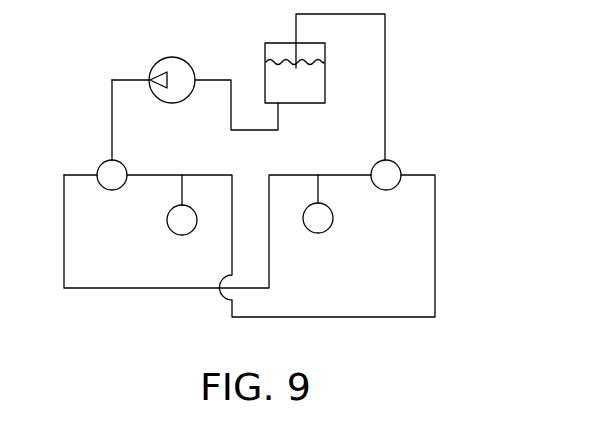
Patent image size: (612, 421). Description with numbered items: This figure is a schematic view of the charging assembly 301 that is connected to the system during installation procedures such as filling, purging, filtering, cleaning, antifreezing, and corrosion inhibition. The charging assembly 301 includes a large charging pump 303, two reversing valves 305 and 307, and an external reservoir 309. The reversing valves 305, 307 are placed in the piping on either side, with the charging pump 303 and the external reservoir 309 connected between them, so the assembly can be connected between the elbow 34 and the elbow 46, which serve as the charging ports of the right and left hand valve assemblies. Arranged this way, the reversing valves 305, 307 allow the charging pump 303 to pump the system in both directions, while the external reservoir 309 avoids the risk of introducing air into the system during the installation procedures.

The charging assembly 301 is at (178, 301).
The charging pump 303 is at (190, 60).
The reversing valve 305 is at (101, 163).
The reversing valve 307 is at (392, 162).
The external reservoir 309 is at (361, 130).
The elbow 46 is at (182, 235).
The elbow 34 is at (327, 230).